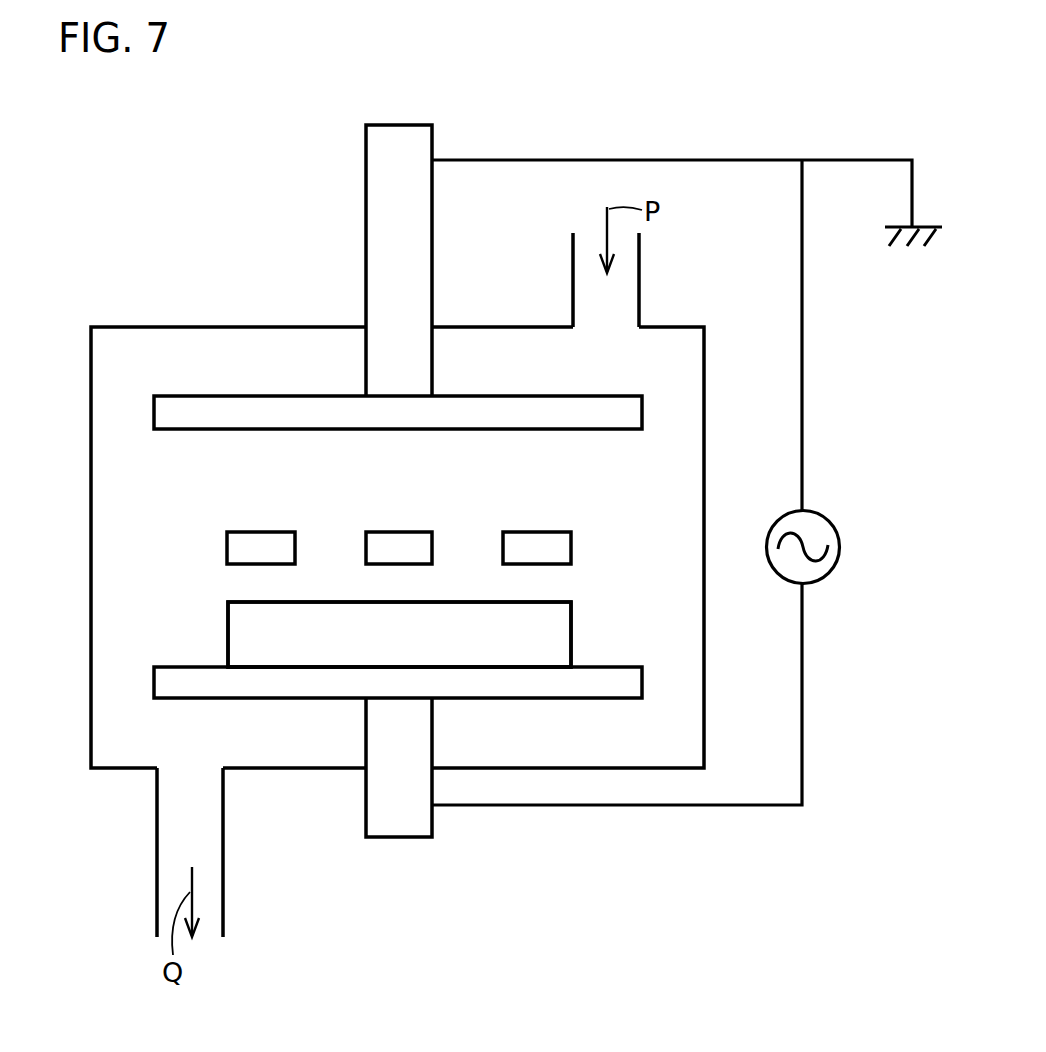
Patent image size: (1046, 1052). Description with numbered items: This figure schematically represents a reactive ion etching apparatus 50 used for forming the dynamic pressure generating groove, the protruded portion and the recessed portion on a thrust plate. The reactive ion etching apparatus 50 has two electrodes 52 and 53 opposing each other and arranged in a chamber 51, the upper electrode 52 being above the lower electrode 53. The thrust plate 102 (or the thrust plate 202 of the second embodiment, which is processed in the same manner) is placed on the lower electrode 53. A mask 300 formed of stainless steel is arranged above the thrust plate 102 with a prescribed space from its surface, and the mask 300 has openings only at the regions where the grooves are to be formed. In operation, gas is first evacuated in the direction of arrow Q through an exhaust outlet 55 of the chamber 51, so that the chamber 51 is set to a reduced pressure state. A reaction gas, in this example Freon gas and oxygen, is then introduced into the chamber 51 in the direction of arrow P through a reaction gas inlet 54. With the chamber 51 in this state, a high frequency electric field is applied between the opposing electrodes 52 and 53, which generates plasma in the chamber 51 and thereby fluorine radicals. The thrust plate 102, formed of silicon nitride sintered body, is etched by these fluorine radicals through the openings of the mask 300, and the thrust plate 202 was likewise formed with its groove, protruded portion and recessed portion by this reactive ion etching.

The reactive ion etching apparatus 50 is at (223, 275).
The chamber 51 is at (137, 327).
The electrode 52 is at (378, 207).
The electrode 53 is at (380, 808).
The reaction gas inlet 54 is at (641, 268).
The exhaust outlet 55 is at (157, 855).
The mask 300 is at (556, 543).
The thrust plate 102 is at (555, 628).
The thrust plate 202 is at (509, 639).